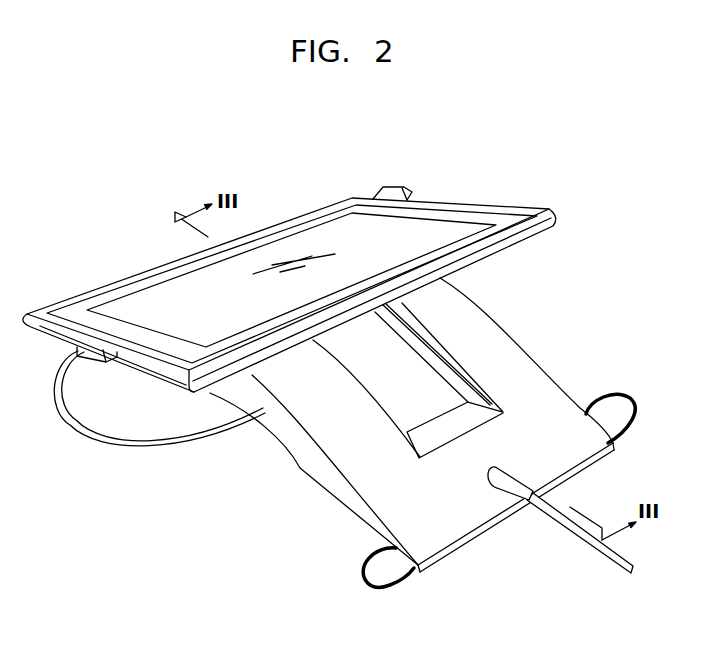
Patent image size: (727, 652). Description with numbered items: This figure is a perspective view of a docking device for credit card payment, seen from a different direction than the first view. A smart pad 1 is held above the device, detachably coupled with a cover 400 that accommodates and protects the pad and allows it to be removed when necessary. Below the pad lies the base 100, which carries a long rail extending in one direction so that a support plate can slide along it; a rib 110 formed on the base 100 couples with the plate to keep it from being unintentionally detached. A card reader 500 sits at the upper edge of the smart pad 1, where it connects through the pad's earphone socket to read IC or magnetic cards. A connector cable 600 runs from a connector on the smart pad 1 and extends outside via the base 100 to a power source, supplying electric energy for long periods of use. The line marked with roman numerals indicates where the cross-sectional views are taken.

The smart pad 1 is at (317, 232).
The base 100 is at (543, 384).
The rib 110 is at (460, 368).
The cover 400 is at (551, 208).
The card reader 500 is at (395, 186).
The connector cable 600 is at (114, 446).